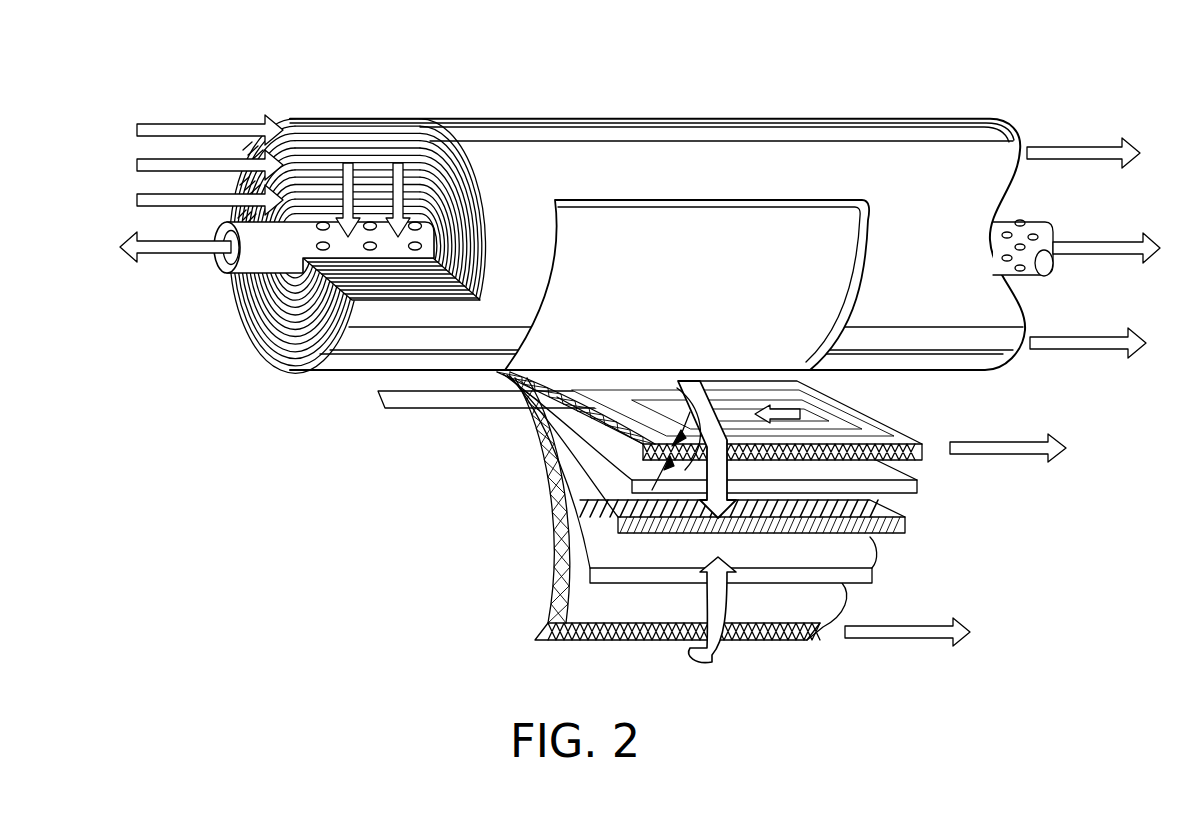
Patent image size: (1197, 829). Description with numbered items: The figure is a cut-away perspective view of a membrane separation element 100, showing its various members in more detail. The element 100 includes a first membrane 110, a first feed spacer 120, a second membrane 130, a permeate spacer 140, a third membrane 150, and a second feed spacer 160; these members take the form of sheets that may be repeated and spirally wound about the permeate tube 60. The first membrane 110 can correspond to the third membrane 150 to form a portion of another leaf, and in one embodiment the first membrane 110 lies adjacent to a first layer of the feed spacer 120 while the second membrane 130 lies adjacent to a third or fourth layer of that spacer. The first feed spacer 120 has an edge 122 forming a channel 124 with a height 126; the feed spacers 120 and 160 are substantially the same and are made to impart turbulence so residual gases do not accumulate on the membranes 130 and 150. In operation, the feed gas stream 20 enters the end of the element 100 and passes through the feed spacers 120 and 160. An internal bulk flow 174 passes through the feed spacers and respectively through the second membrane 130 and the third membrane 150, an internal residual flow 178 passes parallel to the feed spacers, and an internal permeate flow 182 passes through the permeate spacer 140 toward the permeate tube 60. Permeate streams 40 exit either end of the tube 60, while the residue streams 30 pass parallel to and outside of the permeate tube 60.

The feed gas stream 20 is at (135, 198).
The residue streams 30 is at (1080, 333).
The permeate streams 40 is at (1095, 237).
The permeate tube 60 is at (216, 224).
The membrane separation element 100 is at (1028, 70).
The first membrane 110 is at (724, 218).
The first feed spacer 120 is at (610, 440).
The edge 122 is at (677, 388).
The channel 124 is at (614, 410).
The height 126 is at (727, 390).
The second membrane 130 is at (612, 477).
The permeate spacer 140 is at (612, 520).
The third membrane 150 is at (593, 568).
The second feed spacer 160 is at (543, 622).
The internal bulk flow 174 is at (728, 600).
The internal residual flow 178 is at (903, 640).
The internal permeate flow 182 is at (398, 160).